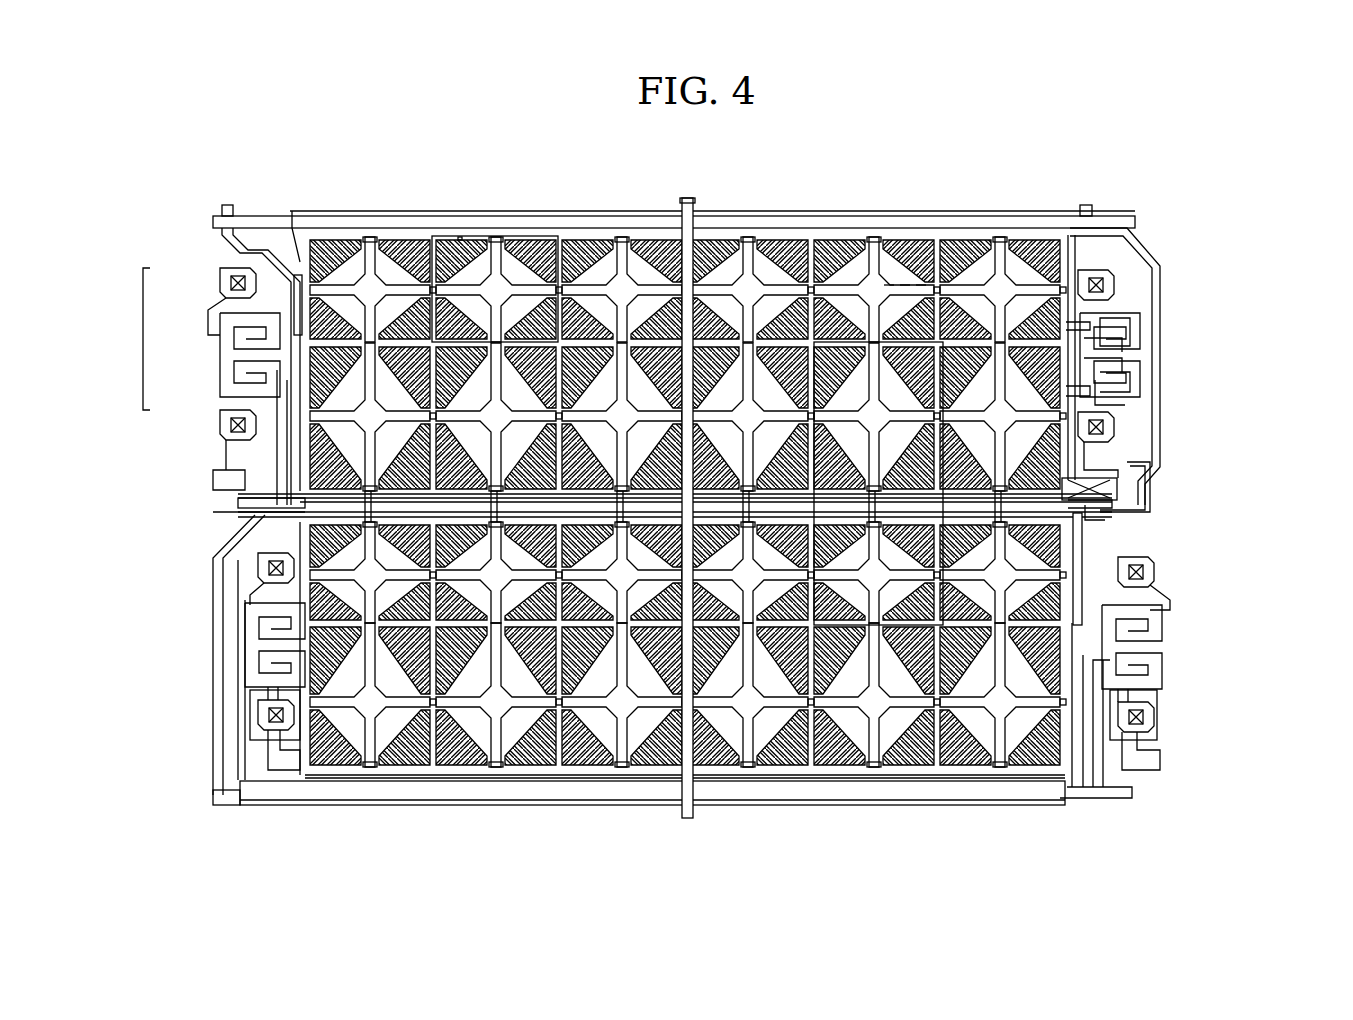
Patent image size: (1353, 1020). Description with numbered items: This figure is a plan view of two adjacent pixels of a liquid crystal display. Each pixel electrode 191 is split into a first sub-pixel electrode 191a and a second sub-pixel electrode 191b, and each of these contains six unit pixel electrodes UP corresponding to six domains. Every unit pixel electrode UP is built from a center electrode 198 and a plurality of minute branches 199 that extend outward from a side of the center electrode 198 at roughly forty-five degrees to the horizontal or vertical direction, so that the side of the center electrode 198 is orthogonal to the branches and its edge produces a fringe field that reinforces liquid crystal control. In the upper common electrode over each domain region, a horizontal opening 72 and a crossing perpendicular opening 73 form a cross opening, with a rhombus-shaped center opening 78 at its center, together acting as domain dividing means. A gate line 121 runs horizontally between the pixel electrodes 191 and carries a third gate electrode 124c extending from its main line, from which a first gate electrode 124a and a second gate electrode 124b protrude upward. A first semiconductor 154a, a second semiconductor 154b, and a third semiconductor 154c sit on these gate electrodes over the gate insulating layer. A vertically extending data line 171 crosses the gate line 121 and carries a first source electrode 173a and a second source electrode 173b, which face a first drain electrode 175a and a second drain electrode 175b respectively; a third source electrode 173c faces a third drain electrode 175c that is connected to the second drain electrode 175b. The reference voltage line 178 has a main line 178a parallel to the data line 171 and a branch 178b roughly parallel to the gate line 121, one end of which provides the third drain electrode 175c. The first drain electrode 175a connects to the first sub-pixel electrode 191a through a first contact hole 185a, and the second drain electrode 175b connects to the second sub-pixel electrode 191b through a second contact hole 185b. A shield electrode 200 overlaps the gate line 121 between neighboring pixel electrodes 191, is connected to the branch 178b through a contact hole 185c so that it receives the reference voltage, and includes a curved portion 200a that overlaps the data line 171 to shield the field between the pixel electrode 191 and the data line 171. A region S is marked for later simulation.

The unit pixel electrode UP is at (454, 202).
The center electrode 198 is at (495, 253).
The minute branches 199 is at (505, 253).
The main line 178a is at (712, 490).
The branch 178b is at (1046, 390).
The reference voltage line 178 is at (956, 473).
The perpendicular opening 73 is at (878, 223).
The center opening 78 is at (911, 223).
The horizontal opening 72 is at (935, 223).
The data line 171 is at (1138, 358).
The first contact hole 185a is at (1153, 268).
The first drain electrode 175a is at (1154, 331).
The first semiconductor 154a is at (1147, 312).
The first gate electrode 124a is at (1189, 327).
The first source electrode 173a is at (1156, 340).
The second source electrode 173b is at (1182, 358).
The second gate electrode 124b is at (1189, 386).
The second semiconductor 154b is at (1147, 404).
The second drain electrode 175b is at (1186, 412).
The second contact hole 185b is at (1153, 445).
The third drain electrode 175c is at (1188, 481).
The third gate electrode 124c is at (1144, 486).
The third semiconductor 154c is at (1172, 501).
The contact hole 185c is at (1161, 526).
The third source electrode 173c is at (1159, 542).
The curved portion 200a is at (1160, 653).
The shield electrode 200 is at (1143, 671).
The pixel electrode 191 is at (203, 375).
The first sub-pixel electrode 191a is at (225, 298).
The second sub-pixel electrode 191b is at (225, 437).
The gate line 121 is at (236, 520).
The region S is at (857, 594).